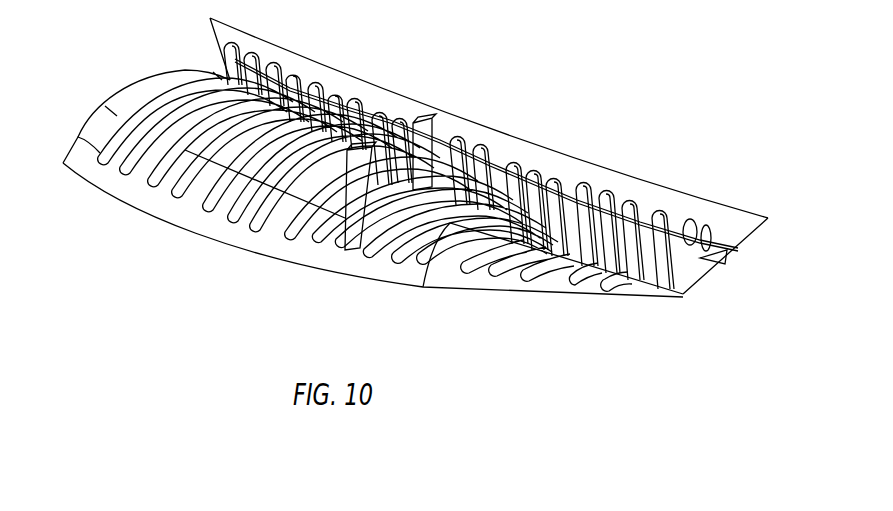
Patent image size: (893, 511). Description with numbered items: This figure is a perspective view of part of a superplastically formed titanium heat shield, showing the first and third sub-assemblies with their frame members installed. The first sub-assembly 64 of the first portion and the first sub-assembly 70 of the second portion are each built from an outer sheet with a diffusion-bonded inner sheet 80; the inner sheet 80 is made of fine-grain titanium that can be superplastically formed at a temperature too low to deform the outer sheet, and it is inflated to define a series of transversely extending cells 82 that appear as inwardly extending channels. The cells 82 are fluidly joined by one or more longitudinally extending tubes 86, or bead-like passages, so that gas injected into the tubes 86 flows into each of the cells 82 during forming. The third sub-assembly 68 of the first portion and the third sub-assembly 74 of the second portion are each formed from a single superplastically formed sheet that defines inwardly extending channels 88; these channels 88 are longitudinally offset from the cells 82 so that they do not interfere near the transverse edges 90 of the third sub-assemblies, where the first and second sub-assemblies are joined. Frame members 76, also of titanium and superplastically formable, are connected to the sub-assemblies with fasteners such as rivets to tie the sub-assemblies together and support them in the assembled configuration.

The first sub-assembly 64 is at (267, 63).
The third sub-assembly 68 is at (163, 78).
The first sub-assembly of the second portion 70 is at (607, 183).
The third sub-assembly of the second portion 74 is at (470, 280).
The frame members 76 is at (438, 183).
The inner sheet 80 is at (327, 80).
The cells 82 is at (520, 165).
The tubes 86 is at (727, 238).
The channels 88 is at (62, 158).
The transverse edges 90 is at (155, 213).